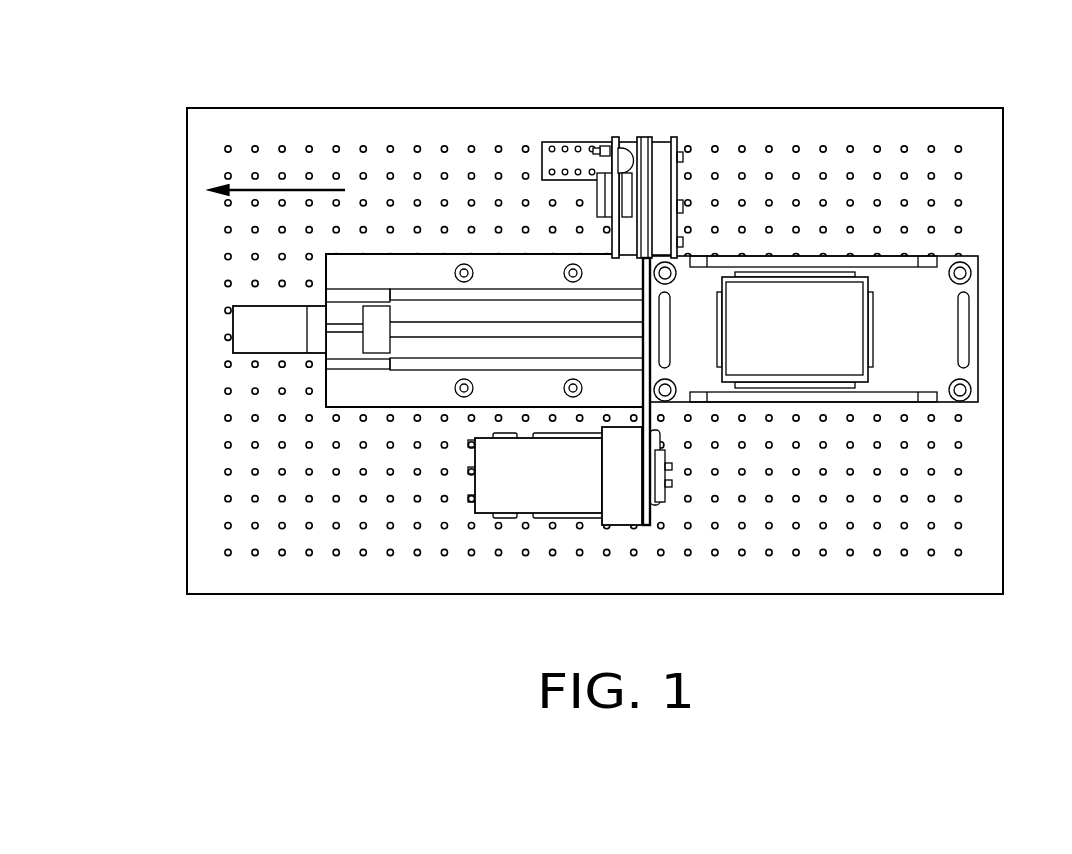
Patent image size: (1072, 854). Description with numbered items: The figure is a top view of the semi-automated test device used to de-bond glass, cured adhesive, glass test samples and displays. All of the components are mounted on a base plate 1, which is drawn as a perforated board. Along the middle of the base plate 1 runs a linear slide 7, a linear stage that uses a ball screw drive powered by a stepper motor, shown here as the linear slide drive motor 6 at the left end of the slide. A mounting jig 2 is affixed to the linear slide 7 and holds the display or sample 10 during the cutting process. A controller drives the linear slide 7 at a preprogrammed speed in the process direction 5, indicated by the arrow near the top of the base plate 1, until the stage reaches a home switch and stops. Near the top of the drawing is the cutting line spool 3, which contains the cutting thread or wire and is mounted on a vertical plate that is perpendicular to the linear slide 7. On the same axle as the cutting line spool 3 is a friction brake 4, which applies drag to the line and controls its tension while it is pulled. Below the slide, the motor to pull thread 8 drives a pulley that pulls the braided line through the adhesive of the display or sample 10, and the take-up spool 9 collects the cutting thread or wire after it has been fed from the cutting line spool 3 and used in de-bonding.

The base plate 1 is at (1003, 485).
The mounting jig 2 is at (980, 337).
The cutting line spool 3 is at (677, 143).
The friction brake 4 is at (612, 163).
The process direction 5 is at (263, 190).
The linear slide drive motor 6 is at (231, 321).
The linear slide 7 is at (367, 407).
The motor to pull thread 8 is at (473, 480).
The take-up spool 9 is at (657, 497).
The display or sample 10 is at (776, 346).